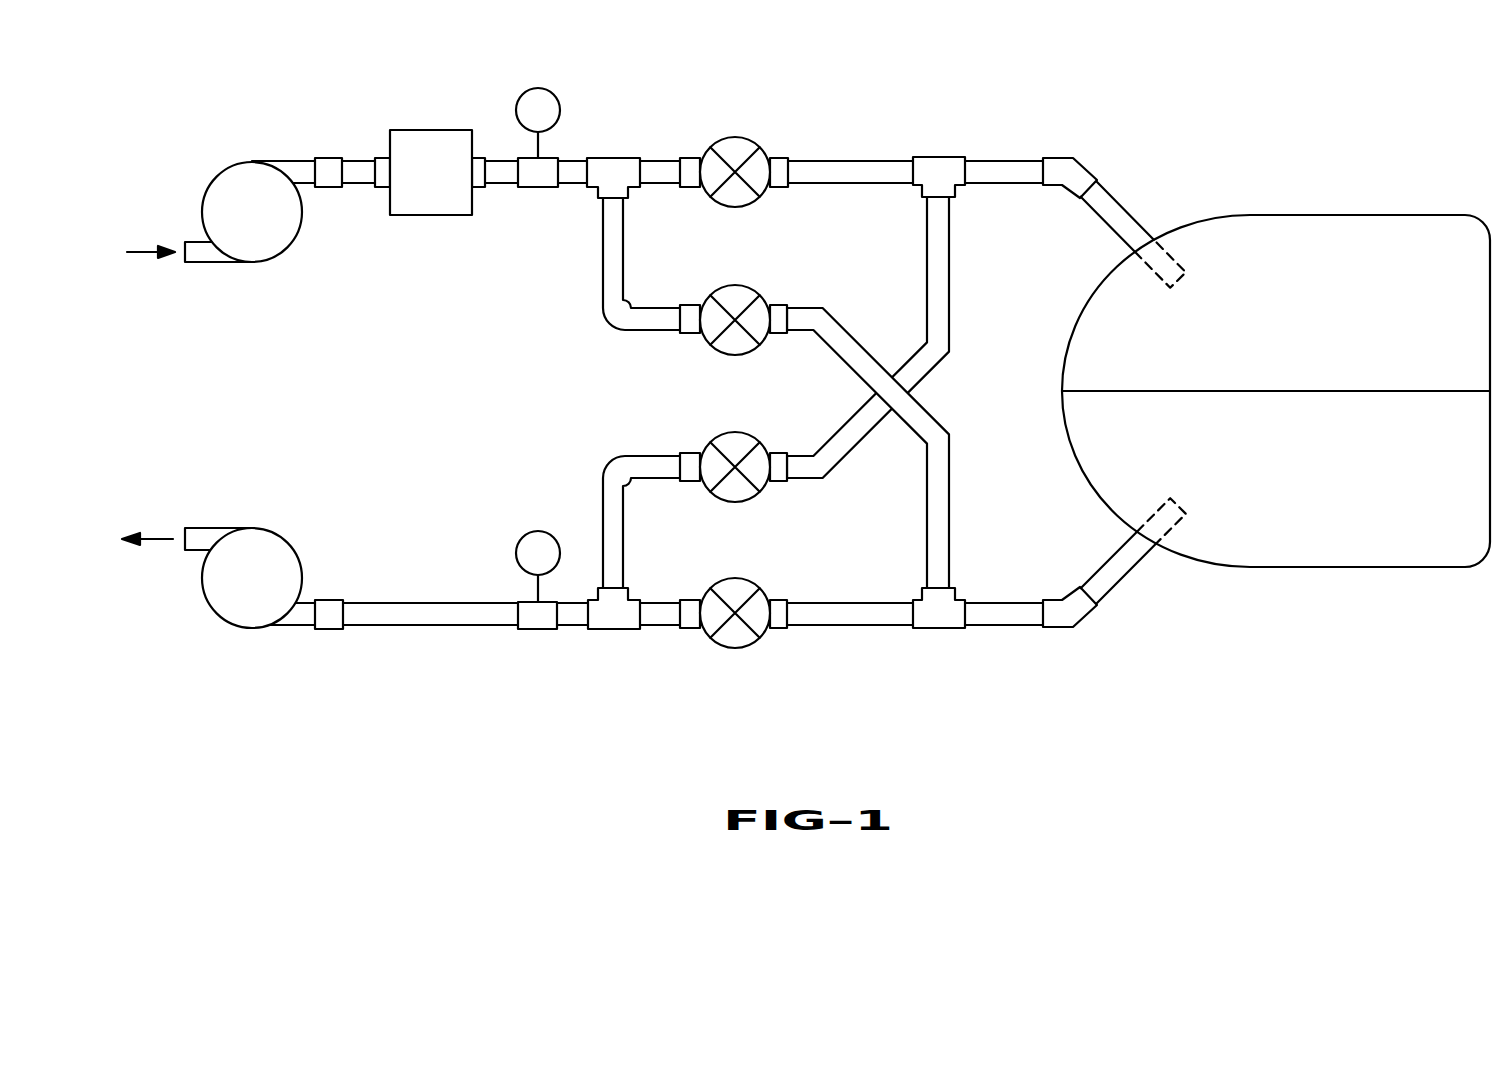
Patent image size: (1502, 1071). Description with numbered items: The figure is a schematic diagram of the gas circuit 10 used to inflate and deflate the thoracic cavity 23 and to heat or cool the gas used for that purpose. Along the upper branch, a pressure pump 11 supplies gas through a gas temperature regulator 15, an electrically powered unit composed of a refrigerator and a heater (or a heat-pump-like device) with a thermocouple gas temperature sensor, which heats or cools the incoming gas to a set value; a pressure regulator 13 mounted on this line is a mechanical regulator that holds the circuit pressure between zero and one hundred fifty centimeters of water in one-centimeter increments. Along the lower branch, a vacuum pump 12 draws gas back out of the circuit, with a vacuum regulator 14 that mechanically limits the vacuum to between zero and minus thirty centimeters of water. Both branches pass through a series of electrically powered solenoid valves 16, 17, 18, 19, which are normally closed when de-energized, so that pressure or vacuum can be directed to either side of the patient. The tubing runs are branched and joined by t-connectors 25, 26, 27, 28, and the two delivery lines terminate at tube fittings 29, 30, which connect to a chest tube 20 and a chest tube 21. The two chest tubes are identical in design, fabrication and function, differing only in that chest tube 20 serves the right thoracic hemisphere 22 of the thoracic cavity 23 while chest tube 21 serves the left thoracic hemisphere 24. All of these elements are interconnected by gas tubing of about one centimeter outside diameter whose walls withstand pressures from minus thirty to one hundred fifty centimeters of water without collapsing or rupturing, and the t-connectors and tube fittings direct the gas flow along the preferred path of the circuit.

The gas circuit 10 is at (985, 652).
The pressure pump 11 is at (228, 170).
The vacuum pump 12 is at (228, 620).
The pressure regulator 13 is at (540, 87).
The vacuum regulator 14 is at (540, 531).
The gas temperature regulator 15 is at (433, 215).
The solenoid valve 16 is at (738, 137).
The solenoid valve 17 is at (748, 292).
The solenoid valve 18 is at (752, 498).
The solenoid valve 19 is at (735, 650).
The chest tube 20 is at (1122, 217).
The chest tube 21 is at (1123, 565).
The right thoracic hemisphere 22 is at (1313, 326).
The thoracic cavity 23 is at (1418, 257).
The left thoracic hemisphere 24 is at (1313, 476).
The t-connector 25 is at (610, 158).
The t-connector 26 is at (612, 630).
The t-connector 27 is at (937, 157).
The t-connector 28 is at (937, 627).
The tube fitting 29 is at (1060, 158).
The tube fitting 30 is at (1058, 627).